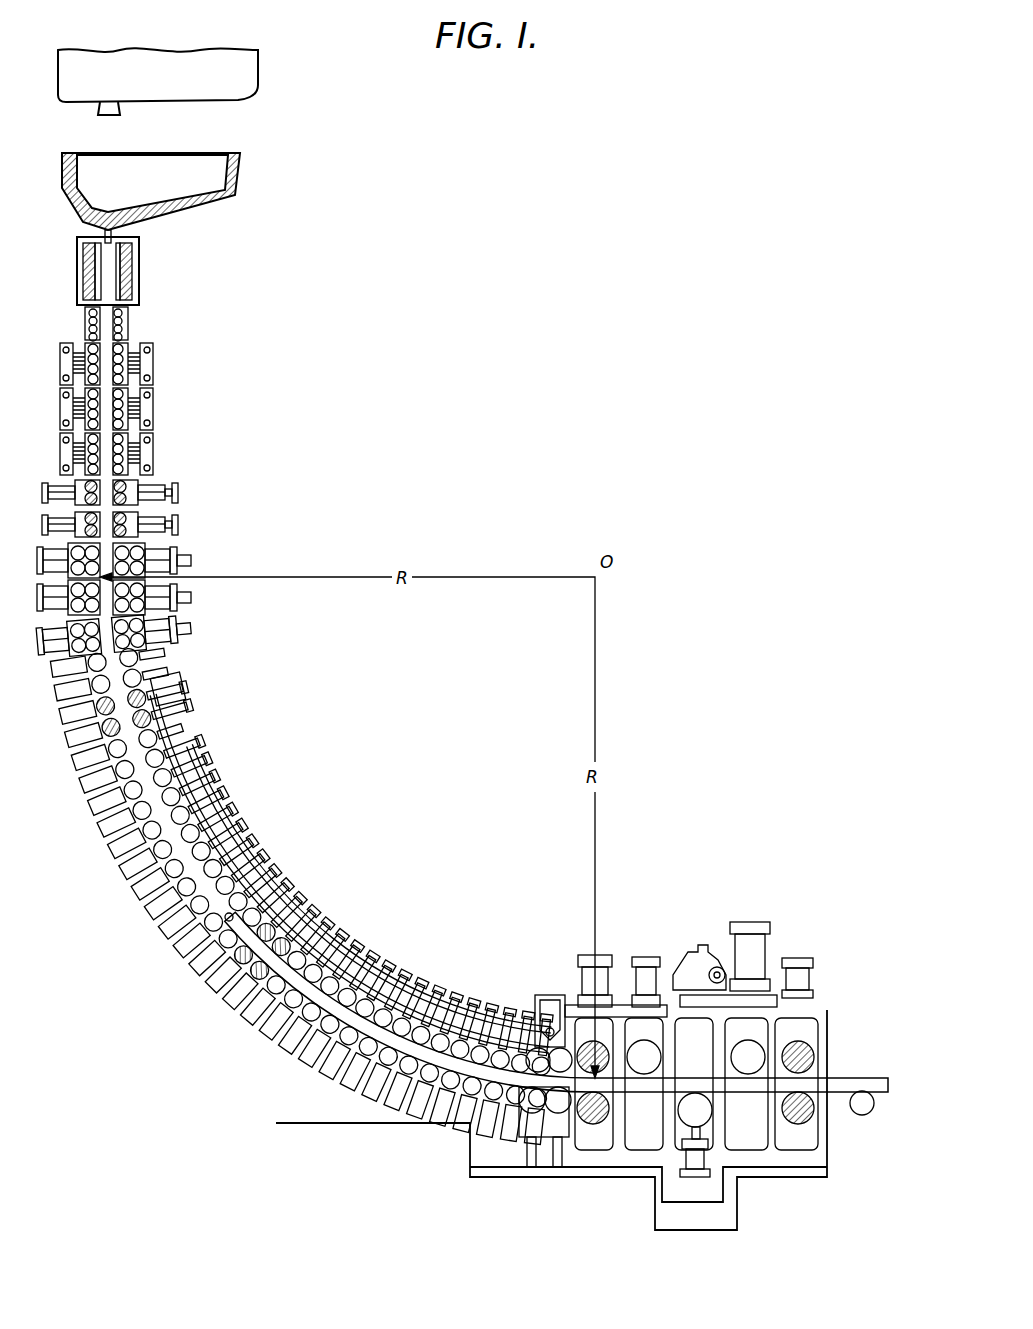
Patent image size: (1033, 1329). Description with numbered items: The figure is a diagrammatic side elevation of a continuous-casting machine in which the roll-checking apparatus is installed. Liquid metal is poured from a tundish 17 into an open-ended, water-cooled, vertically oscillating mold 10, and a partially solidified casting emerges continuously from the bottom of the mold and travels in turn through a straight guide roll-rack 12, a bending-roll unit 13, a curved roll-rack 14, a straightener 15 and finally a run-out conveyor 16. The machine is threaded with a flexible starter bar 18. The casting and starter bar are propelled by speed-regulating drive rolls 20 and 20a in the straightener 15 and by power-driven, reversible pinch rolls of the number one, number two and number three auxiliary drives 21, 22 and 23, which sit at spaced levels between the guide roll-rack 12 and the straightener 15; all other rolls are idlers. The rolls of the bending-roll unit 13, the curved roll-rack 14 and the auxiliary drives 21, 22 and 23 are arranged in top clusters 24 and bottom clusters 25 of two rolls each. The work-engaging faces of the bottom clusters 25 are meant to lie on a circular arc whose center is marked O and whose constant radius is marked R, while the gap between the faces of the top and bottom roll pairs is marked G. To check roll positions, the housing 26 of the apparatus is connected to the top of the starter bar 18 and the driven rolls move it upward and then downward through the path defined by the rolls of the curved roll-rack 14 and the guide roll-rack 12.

The tundish 17 is at (218, 205).
The mold 10 is at (139, 272).
The guide roll-rack 12 is at (155, 385).
The No. 1 auxiliary drive 21 is at (179, 498).
The bending-roll unit 13 is at (196, 589).
The No. 2 auxiliary drive 22 is at (86, 710).
The top clusters 24 is at (205, 790).
The bottom clusters 25 is at (108, 828).
The curved roll-rack 14 is at (282, 898).
The housing 26 is at (235, 924).
The No. 3 auxiliary drive 23 is at (518, 1002).
The flexible starter bar 18 is at (550, 1021).
The straightener 15 is at (712, 945).
The drive roll 20 is at (593, 1126).
The drive roll 20a is at (814, 1062).
The run-out conveyor 16 is at (872, 1110).